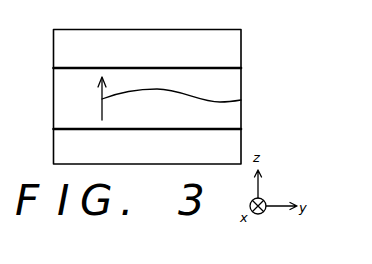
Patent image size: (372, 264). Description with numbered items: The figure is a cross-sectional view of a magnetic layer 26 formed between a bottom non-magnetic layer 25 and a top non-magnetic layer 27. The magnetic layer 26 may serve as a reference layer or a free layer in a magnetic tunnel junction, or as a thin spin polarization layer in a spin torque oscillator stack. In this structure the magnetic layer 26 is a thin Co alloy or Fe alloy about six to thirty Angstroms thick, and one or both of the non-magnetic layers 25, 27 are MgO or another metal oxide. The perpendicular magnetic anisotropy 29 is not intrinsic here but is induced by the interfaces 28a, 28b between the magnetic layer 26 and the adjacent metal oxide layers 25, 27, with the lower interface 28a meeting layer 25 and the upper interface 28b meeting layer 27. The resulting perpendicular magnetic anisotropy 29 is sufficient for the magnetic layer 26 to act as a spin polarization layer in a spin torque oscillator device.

The bottom non-magnetic layer 25 is at (67, 150).
The magnetic layer 26 is at (67, 102).
The top non-magnetic layer 27 is at (67, 50).
The interface 28a is at (241, 130).
The interface 28b is at (241, 68).
The perpendicular magnetic anisotropy 29 is at (241, 101).